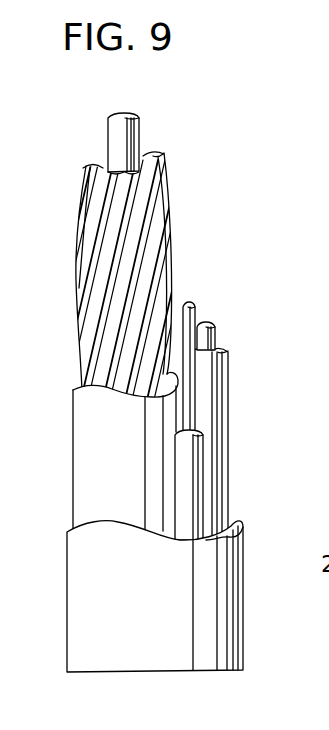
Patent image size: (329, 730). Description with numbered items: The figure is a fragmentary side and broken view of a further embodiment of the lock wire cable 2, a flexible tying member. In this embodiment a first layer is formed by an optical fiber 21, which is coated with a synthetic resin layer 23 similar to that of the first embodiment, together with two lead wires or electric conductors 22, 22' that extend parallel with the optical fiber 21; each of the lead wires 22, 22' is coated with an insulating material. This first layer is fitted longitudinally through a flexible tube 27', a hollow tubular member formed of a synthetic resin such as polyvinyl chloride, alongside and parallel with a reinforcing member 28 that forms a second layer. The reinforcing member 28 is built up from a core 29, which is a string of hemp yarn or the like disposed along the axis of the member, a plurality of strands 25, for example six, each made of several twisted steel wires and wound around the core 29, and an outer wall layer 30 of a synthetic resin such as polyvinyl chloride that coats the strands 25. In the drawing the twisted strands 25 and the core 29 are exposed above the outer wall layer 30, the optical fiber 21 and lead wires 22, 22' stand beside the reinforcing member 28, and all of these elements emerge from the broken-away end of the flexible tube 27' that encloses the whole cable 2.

The lock wire cable 2 is at (168, 377).
The optical fiber 21 is at (217, 335).
The lead wire 22 is at (214, 351).
The lead wire 22' is at (227, 485).
The synthetic resin layer 23 is at (212, 378).
The strands 25 is at (82, 203).
The flexible tube 27' is at (134, 596).
The reinforcing member 28 is at (166, 131).
The core 29 is at (112, 138).
The outer wall layer 30 is at (87, 437).